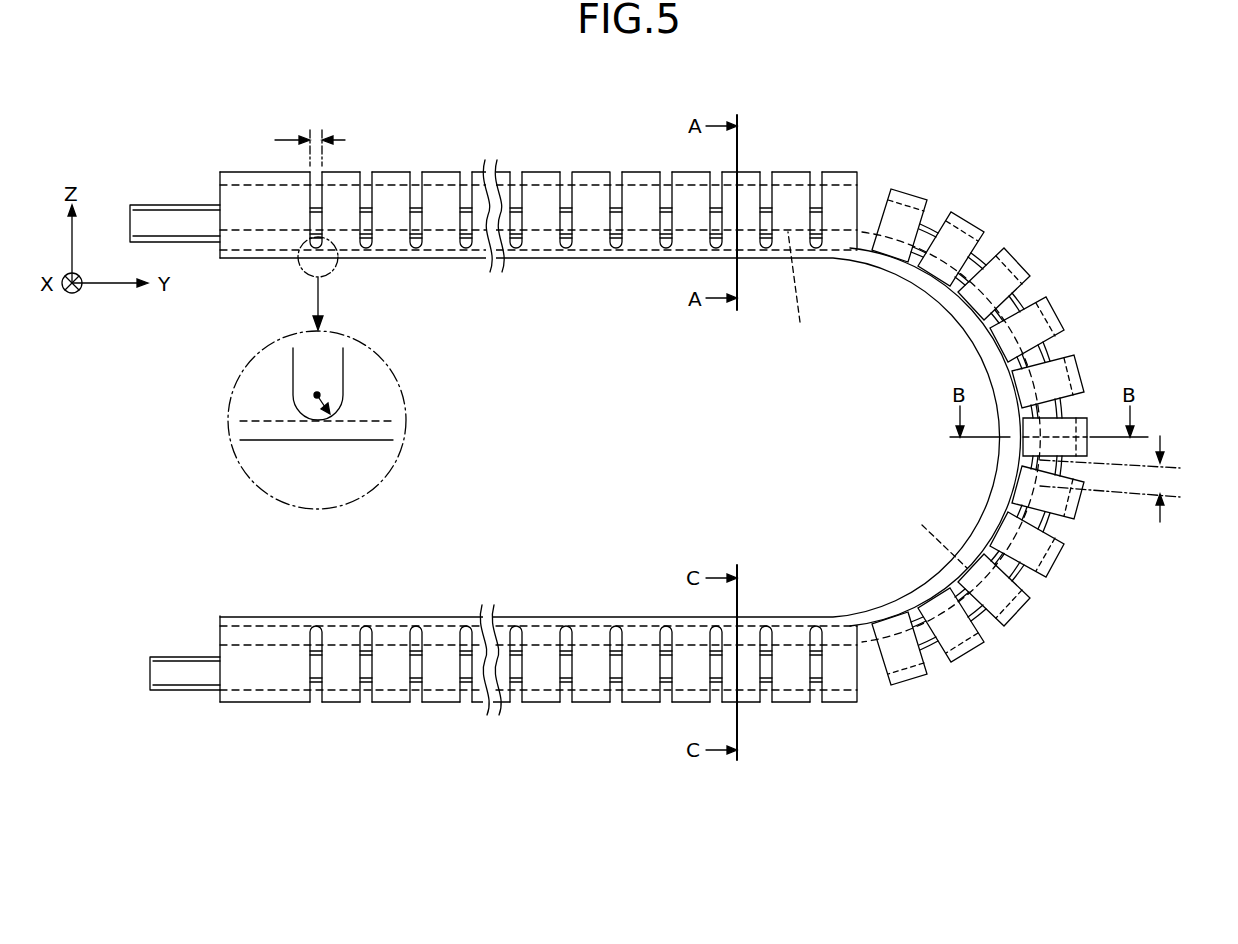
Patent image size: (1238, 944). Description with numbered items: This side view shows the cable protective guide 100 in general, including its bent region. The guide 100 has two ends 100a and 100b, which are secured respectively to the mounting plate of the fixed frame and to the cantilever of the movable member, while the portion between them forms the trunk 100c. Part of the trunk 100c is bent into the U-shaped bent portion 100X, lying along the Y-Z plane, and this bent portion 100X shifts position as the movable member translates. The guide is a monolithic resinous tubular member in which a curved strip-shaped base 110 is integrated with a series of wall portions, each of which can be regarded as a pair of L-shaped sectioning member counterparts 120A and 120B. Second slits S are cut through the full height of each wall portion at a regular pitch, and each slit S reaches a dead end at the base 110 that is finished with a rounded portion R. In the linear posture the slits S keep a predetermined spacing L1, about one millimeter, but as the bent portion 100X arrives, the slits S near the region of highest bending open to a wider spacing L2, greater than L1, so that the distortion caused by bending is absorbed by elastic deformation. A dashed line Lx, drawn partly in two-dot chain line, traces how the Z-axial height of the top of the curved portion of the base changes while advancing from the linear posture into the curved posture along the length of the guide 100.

The cable protective guide 100 is at (1108, 122).
The end 100a is at (268, 715).
The end 100b is at (255, 167).
The trunk 100c is at (462, 165).
The U-shaped bent portion 100X is at (1068, 575).
The base 110 is at (586, 262).
The sectioning member counterpart 120A is at (582, 195).
The sectioning member counterpart 120B is at (591, 210).
The spacing L1 is at (329, 147).
The spacing L2 is at (1124, 497).
The dashed line Lx is at (877, 400).
The second slit S is at (328, 357).
The rounded portion R is at (330, 395).